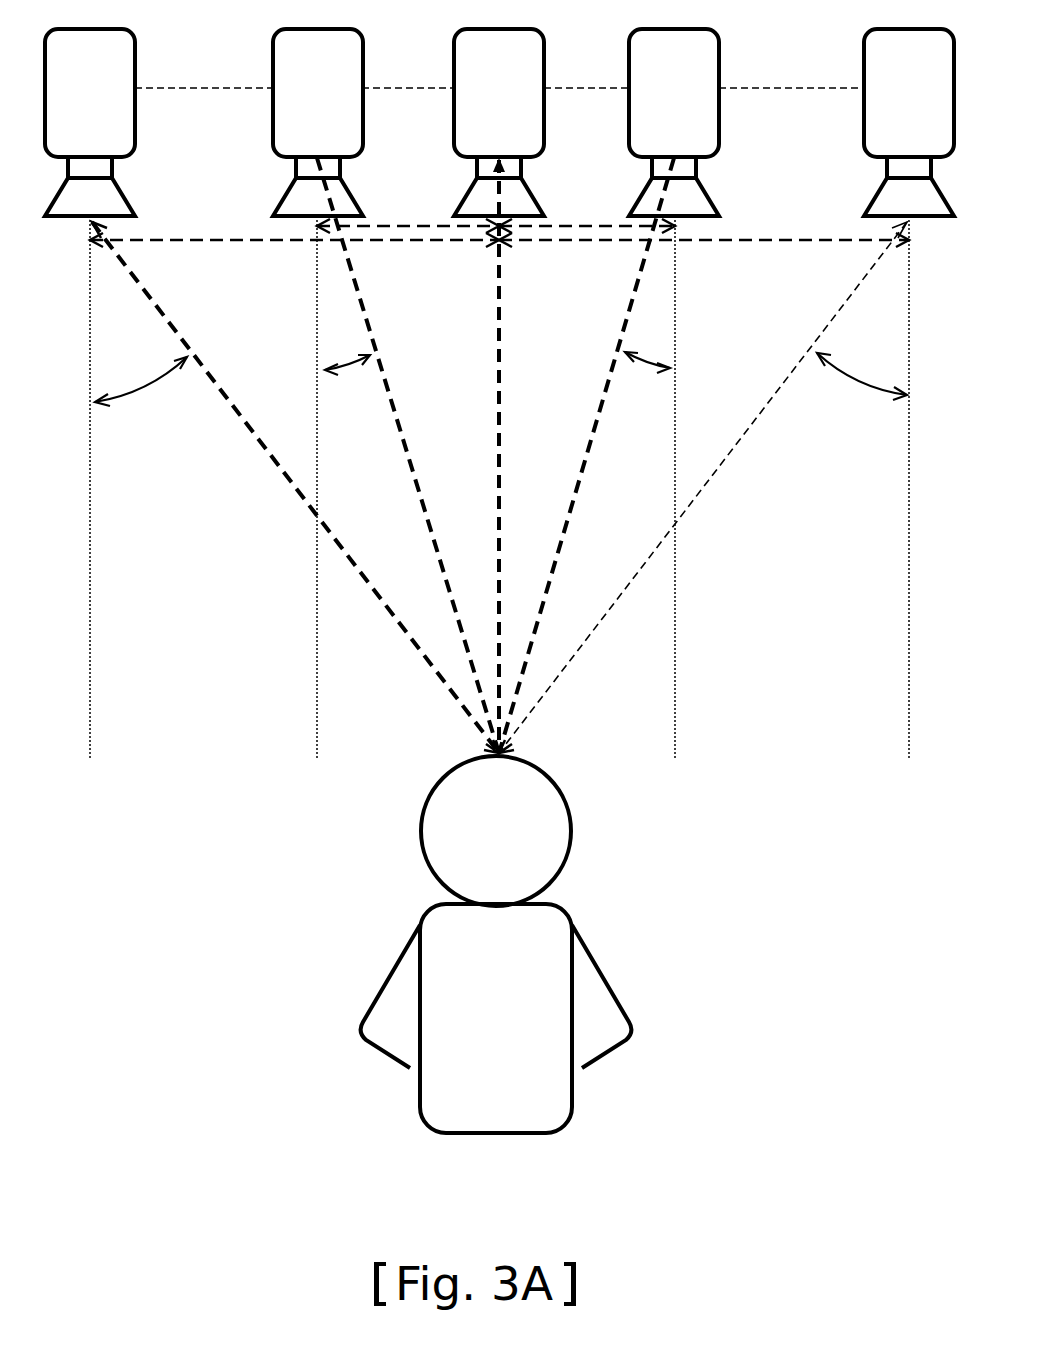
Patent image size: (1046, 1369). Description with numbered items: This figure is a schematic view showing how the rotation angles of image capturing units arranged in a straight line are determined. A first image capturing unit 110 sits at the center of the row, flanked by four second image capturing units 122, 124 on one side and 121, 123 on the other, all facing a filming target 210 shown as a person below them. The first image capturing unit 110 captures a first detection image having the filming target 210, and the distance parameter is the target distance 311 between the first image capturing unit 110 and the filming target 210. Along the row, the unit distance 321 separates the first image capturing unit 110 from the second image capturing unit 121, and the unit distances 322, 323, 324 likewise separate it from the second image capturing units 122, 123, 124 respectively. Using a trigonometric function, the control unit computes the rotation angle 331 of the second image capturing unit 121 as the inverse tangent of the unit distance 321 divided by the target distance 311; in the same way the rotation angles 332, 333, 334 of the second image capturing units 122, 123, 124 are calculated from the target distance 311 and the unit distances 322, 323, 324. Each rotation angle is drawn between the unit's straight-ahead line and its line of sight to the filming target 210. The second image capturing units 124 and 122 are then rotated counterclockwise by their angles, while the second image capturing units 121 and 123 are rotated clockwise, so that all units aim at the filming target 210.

The first image capturing unit 110 is at (478, 75).
The second image capturing unit 121 is at (653, 75).
The second image capturing unit 122 is at (297, 75).
The second image capturing unit 123 is at (888, 75).
The second image capturing unit 124 is at (69, 75).
The filming target 210 is at (555, 1122).
The target distance 311 is at (523, 455).
The unit distance 321 is at (587, 209).
The unit distance 322 is at (408, 209).
The unit distance 323 is at (704, 259).
The unit distance 324 is at (294, 260).
The rotation angle 331 is at (646, 381).
The rotation angle 332 is at (349, 386).
The rotation angle 333 is at (862, 390).
The rotation angle 334 is at (141, 393).